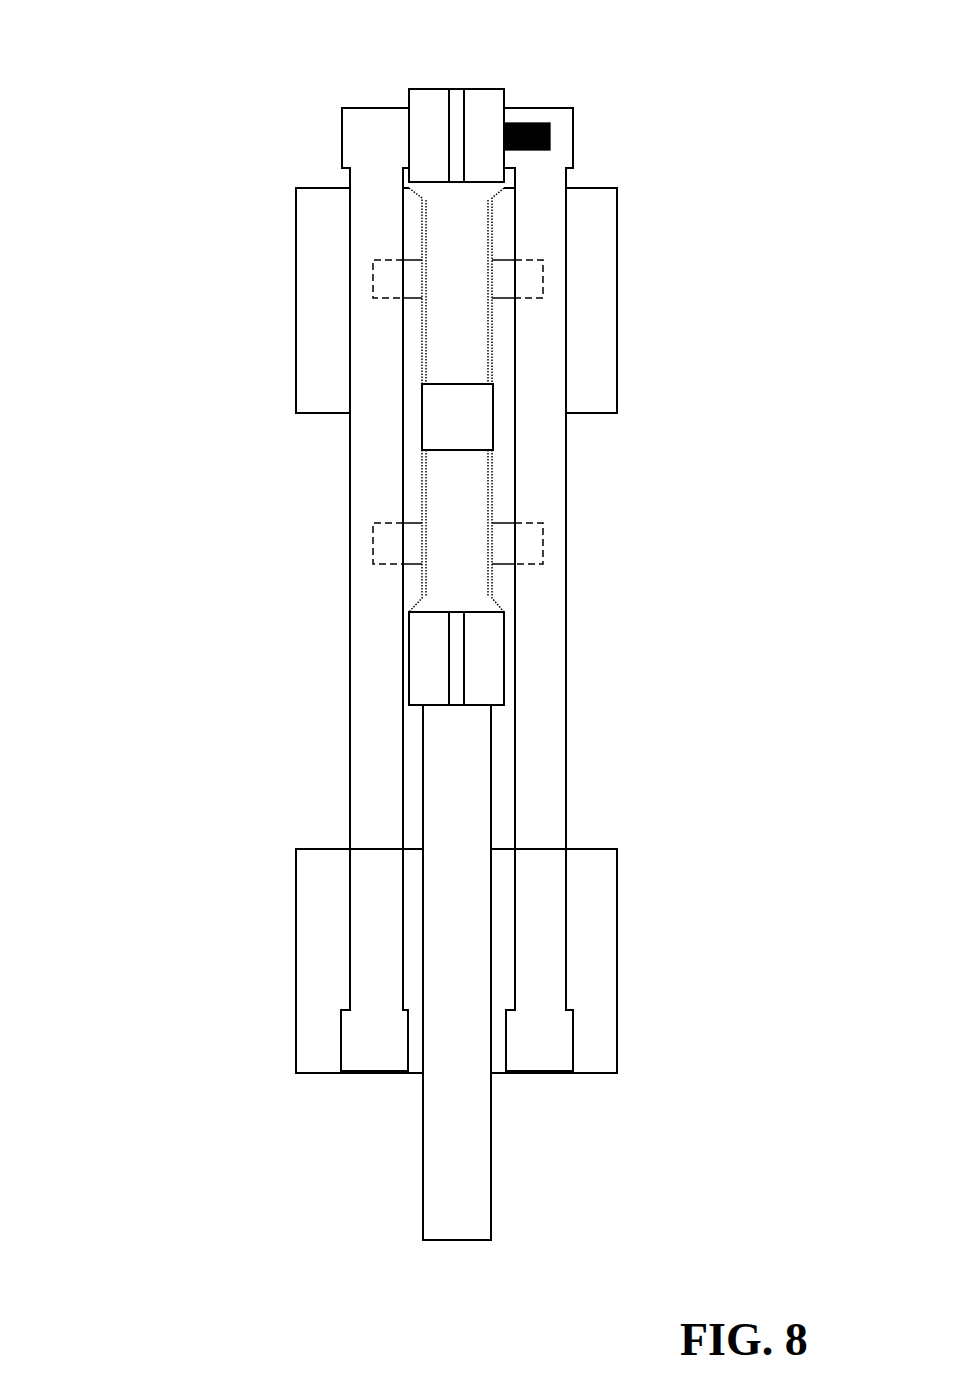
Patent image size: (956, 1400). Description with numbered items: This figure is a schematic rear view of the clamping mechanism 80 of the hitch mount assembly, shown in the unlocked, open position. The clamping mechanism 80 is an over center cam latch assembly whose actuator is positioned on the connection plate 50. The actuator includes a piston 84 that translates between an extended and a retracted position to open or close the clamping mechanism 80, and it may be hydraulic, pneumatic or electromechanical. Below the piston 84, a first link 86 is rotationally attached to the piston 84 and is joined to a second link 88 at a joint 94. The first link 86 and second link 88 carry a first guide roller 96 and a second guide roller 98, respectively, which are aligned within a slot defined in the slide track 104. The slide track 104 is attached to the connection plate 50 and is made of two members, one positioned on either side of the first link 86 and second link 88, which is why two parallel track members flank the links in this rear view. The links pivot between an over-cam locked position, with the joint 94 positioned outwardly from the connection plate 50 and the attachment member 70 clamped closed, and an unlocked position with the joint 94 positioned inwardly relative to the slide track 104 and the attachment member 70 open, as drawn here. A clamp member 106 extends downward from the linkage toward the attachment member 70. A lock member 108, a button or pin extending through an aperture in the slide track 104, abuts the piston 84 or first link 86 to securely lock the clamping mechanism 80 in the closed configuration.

The clamping mechanism 80 is at (214, 97).
The piston 84 is at (455, 110).
The lock member 108 is at (550, 124).
The slide track 104 is at (363, 783).
The first link 86 is at (455, 262).
The second link 88 is at (443, 492).
The joint 94 is at (437, 405).
The first guide roller 96 is at (405, 278).
The second guide roller 98 is at (414, 544).
The clamp member 106 is at (453, 846).
The connection plate 50 is at (617, 302).
The attachment member 70 is at (617, 963).